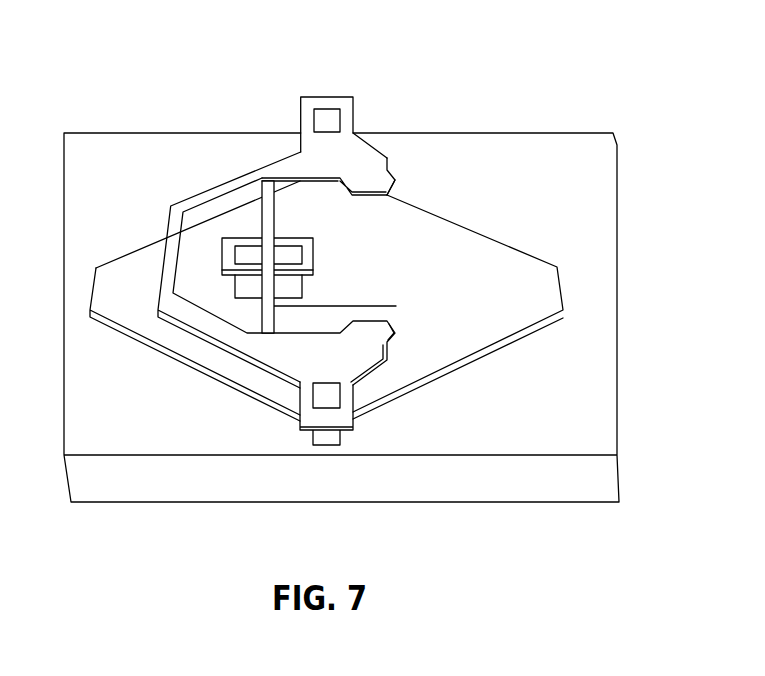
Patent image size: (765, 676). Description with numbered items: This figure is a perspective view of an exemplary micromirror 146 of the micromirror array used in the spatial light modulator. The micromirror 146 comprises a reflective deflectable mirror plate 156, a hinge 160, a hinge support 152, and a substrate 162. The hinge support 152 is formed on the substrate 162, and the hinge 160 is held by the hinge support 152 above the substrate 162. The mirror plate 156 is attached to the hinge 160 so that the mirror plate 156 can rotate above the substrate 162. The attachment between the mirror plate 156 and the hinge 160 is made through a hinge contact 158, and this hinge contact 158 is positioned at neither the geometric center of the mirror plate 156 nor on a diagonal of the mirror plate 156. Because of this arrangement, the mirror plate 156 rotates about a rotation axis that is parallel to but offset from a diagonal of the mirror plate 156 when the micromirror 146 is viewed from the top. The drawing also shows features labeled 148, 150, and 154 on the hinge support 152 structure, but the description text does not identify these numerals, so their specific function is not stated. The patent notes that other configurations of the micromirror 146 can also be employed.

The micromirror 146 is at (224, 80).
The mounting aperture 148 is at (327, 120).
The mounting tab 150 is at (355, 117).
The hinge support 152 is at (165, 243).
The notch 154 is at (393, 183).
The reflective deflectable mirror plate 156 is at (472, 252).
The hinge contact 158 is at (318, 260).
The hinge 160 is at (356, 305).
The substrate 162 is at (470, 480).